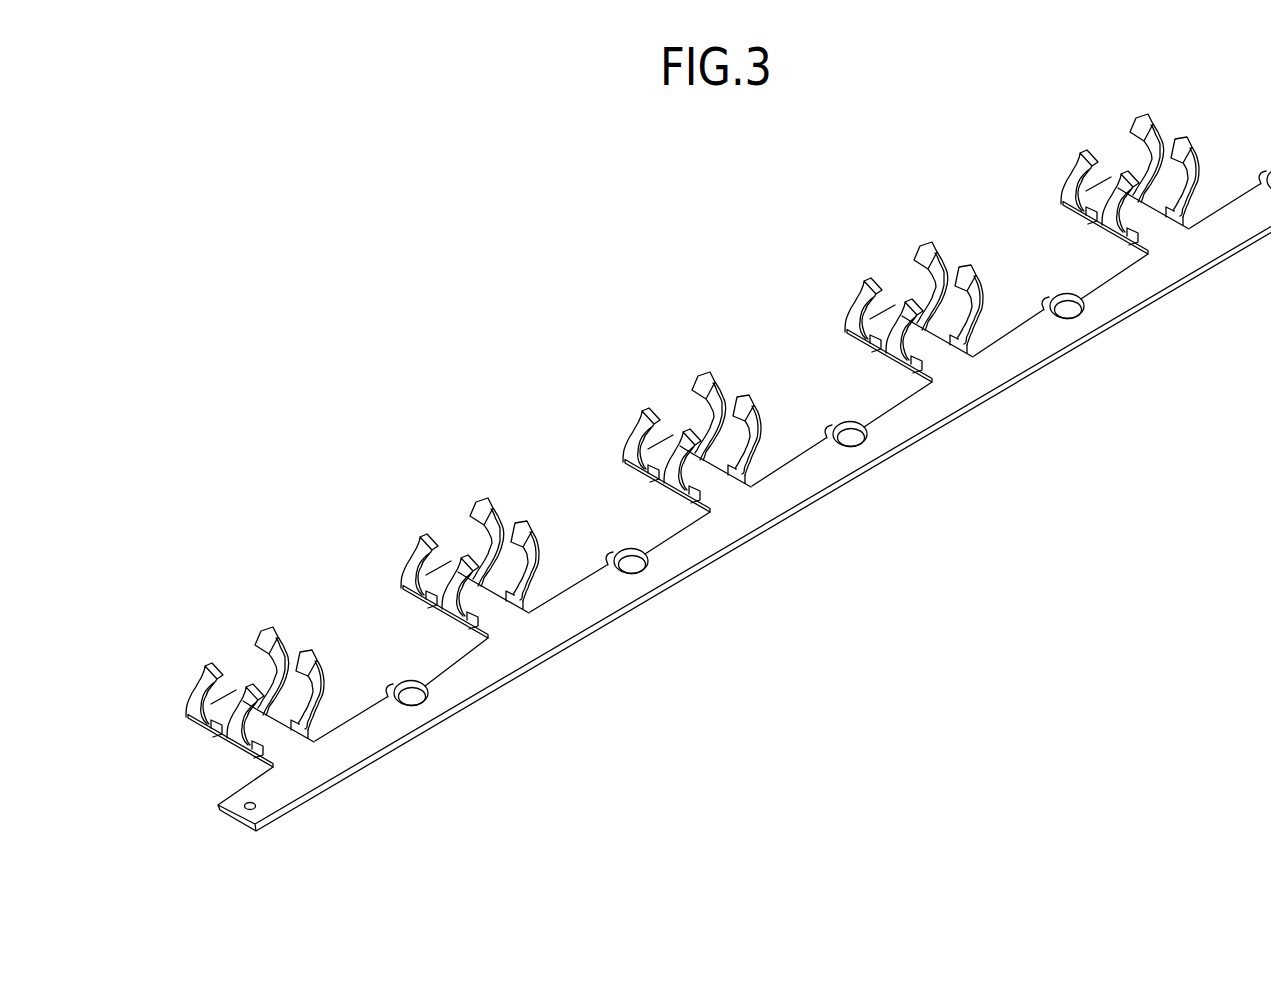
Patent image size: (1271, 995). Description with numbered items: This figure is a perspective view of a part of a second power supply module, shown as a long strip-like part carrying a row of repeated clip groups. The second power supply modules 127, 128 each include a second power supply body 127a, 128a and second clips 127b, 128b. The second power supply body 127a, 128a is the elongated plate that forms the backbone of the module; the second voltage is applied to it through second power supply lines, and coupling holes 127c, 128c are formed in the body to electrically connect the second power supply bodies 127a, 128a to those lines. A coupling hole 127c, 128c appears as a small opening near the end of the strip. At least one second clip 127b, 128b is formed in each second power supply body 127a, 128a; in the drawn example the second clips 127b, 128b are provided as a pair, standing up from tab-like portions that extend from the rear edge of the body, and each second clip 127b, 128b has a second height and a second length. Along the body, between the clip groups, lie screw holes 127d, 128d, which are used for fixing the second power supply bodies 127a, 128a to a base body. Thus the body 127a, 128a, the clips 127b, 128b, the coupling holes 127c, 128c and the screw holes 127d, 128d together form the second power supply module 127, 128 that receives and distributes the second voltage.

The second power supply module 127 is at (694, 491).
The second power supply module 128 is at (305, 546).
The second power supply body 127a is at (744, 507).
The second power supply body 128a is at (368, 752).
The second clip 127b is at (221, 679).
The second clip 128b is at (197, 694).
The coupling hole 127c is at (204, 836).
The coupling hole 128c is at (245, 808).
The screw hole 127d is at (358, 657).
The screw hole 128d is at (400, 679).